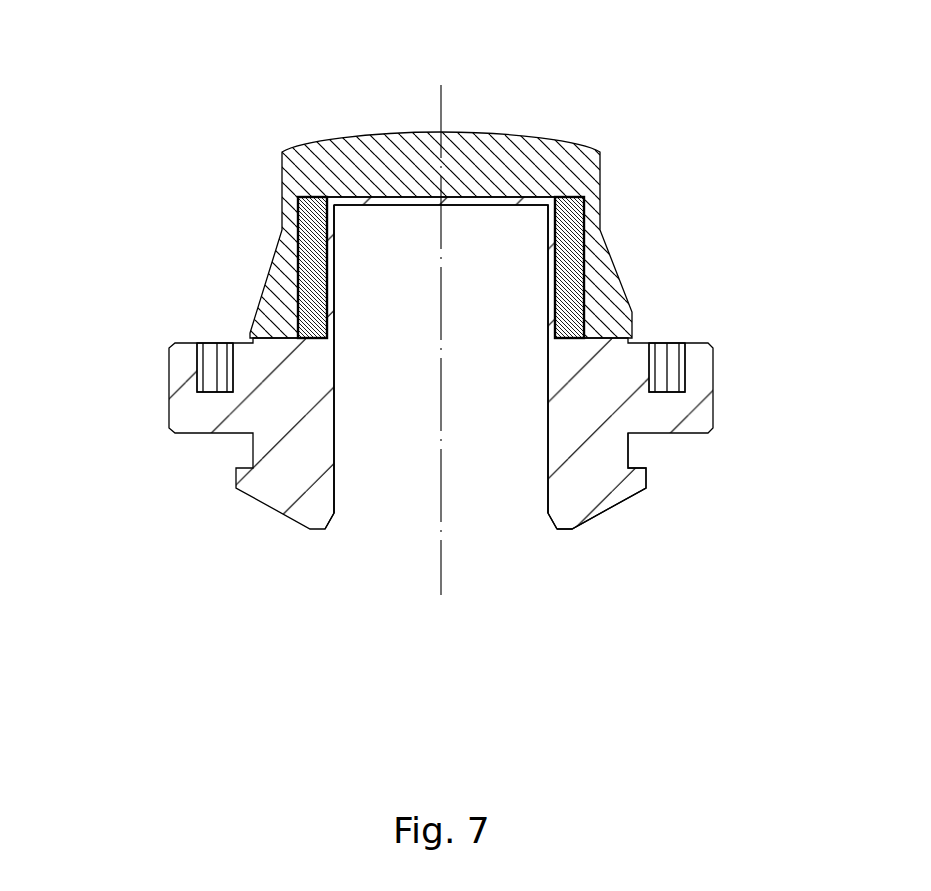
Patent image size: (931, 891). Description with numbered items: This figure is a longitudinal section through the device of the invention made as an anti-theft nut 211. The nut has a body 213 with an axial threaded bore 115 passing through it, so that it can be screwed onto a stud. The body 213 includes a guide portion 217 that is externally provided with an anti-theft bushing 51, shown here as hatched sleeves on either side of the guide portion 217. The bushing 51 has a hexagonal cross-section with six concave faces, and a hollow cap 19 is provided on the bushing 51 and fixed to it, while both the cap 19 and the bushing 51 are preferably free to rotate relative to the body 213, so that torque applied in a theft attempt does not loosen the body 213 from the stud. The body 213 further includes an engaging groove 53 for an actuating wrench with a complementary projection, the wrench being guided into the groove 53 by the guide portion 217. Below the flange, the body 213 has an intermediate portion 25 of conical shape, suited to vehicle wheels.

The hollow cap 19 is at (523, 133).
The anti-theft bushing 51 is at (584, 217).
The engaging groove 53 is at (668, 360).
The intermediate portion 25 is at (272, 488).
The axial threaded bore 115 is at (335, 438).
The body 213 is at (598, 460).
The guide portion 217 is at (502, 260).
The anti-theft nut 211 is at (438, 395).